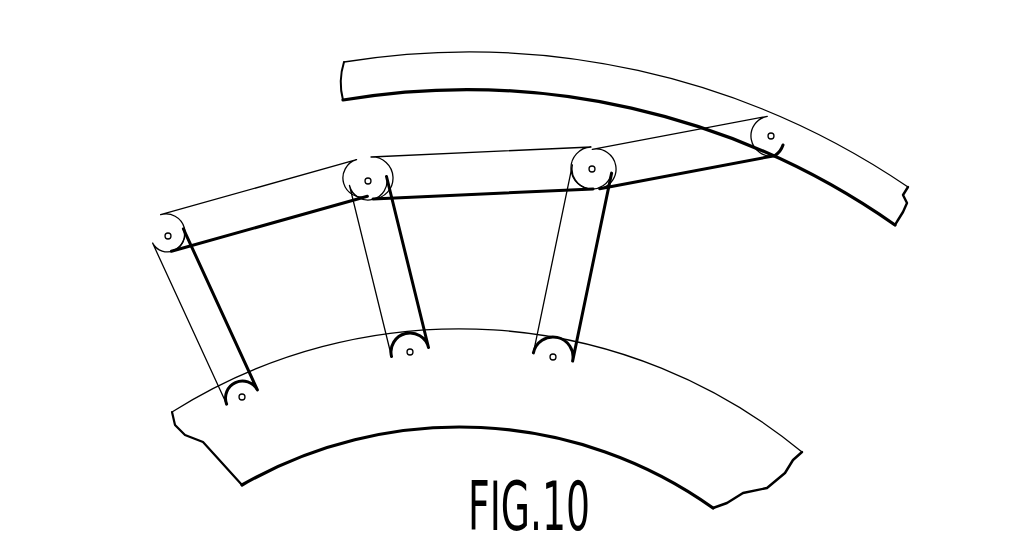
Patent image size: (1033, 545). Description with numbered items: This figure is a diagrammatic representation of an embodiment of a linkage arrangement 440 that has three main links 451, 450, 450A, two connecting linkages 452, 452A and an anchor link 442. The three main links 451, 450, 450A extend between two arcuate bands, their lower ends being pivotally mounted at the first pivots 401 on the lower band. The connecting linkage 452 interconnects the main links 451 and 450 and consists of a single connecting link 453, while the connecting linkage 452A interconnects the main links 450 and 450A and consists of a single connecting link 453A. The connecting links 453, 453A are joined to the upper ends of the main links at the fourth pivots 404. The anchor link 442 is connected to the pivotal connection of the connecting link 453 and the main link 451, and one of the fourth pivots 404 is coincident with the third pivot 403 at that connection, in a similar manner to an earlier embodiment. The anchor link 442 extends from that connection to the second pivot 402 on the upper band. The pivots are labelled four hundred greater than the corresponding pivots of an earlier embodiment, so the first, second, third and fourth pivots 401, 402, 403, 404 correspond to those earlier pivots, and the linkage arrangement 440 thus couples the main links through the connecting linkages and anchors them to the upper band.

The first pivot 401 is at (553, 360).
The second pivot 402 is at (772, 130).
The third pivot 403 is at (605, 178).
The fourth pivot 404 is at (365, 179).
The linkage arrangement 440 is at (624, 112).
The anchor link 442 is at (722, 155).
The main link 450 is at (405, 280).
The main link 450A is at (190, 305).
The main link 451 is at (582, 267).
The connecting linkage 452 is at (467, 97).
The connecting linkage 452A is at (264, 245).
The connecting link 453 is at (482, 173).
The connecting link 453A is at (248, 215).